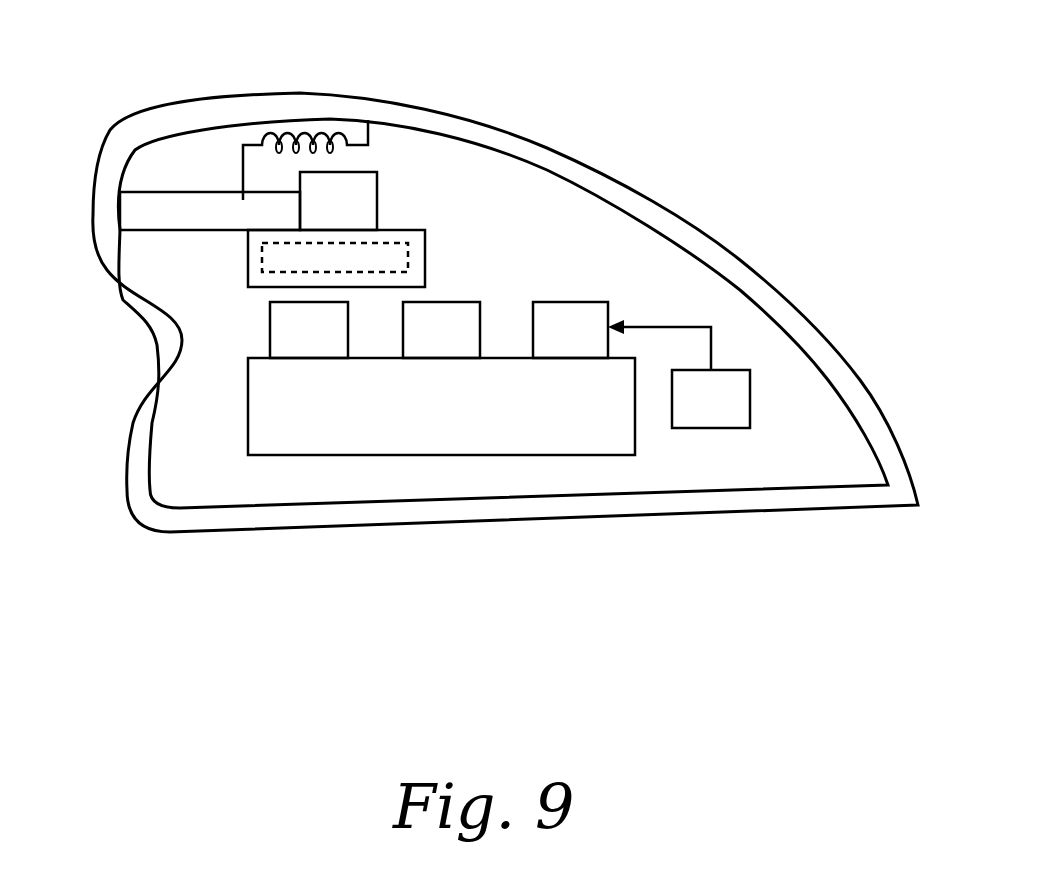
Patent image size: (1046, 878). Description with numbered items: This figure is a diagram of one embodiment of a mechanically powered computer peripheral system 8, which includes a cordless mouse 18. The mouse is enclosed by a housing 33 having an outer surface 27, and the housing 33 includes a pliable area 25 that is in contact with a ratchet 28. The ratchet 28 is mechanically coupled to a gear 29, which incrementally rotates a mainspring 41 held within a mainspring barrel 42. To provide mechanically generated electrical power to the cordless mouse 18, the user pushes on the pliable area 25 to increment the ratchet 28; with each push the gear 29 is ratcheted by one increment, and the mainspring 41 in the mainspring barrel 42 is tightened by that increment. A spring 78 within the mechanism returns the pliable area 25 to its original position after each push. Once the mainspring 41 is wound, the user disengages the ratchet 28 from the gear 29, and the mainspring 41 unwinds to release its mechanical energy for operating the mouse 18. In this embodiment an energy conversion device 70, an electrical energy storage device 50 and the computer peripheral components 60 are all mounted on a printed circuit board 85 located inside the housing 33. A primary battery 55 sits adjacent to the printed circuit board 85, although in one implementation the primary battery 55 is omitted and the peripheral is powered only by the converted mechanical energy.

The mechanically powered computer peripheral system 8 is at (467, 349).
The cordless mouse 18 is at (477, 272).
The pliable area 25 is at (197, 163).
The surface 27 is at (547, 148).
The ratchet 28 is at (188, 185).
The gear 29 is at (320, 218).
The housing 33 is at (134, 427).
The mainspring 41 is at (400, 228).
The mainspring barrel 42 is at (425, 243).
The electrical energy storage device 50 is at (422, 347).
The primary battery 55 is at (692, 417).
The computer peripheral components 60 is at (551, 347).
The energy conversion device 70 is at (290, 347).
The spring 78 is at (313, 135).
The printed circuit board 85 is at (525, 425).